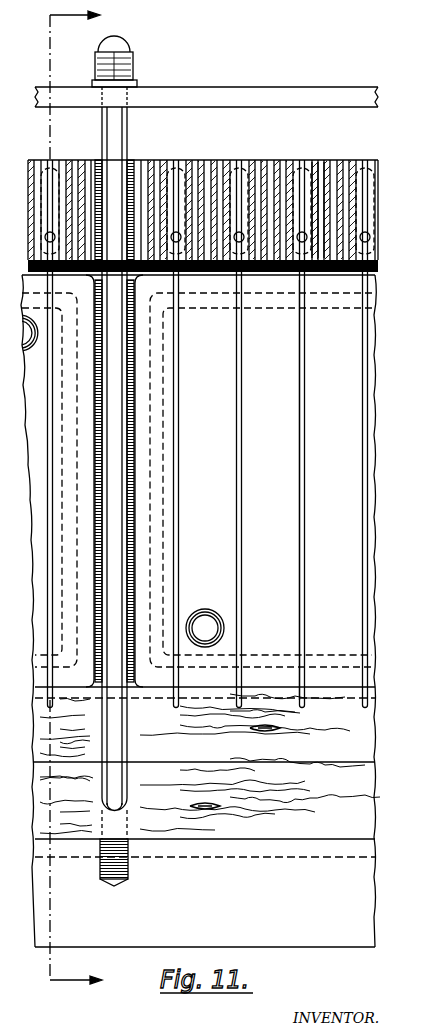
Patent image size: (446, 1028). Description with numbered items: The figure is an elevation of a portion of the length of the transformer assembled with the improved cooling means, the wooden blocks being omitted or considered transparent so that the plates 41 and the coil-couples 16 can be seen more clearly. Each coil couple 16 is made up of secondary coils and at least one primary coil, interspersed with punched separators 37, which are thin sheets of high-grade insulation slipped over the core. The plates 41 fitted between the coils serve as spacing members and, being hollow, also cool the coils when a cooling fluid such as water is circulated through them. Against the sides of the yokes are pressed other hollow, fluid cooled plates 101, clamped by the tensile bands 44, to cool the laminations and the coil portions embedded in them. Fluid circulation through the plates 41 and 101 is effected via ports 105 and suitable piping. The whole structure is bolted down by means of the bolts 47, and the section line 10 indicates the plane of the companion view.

The section line 10 is at (61, 503).
The unitary coil couple 16 is at (187, 160).
The punched separator 37 is at (317, 160).
The plate 41 is at (43, 160).
The tensile band 44 is at (305, 488).
The bolt 47 is at (128, 126).
The fluid cooled plate 101 is at (37, 503).
The port 105 is at (222, 612).